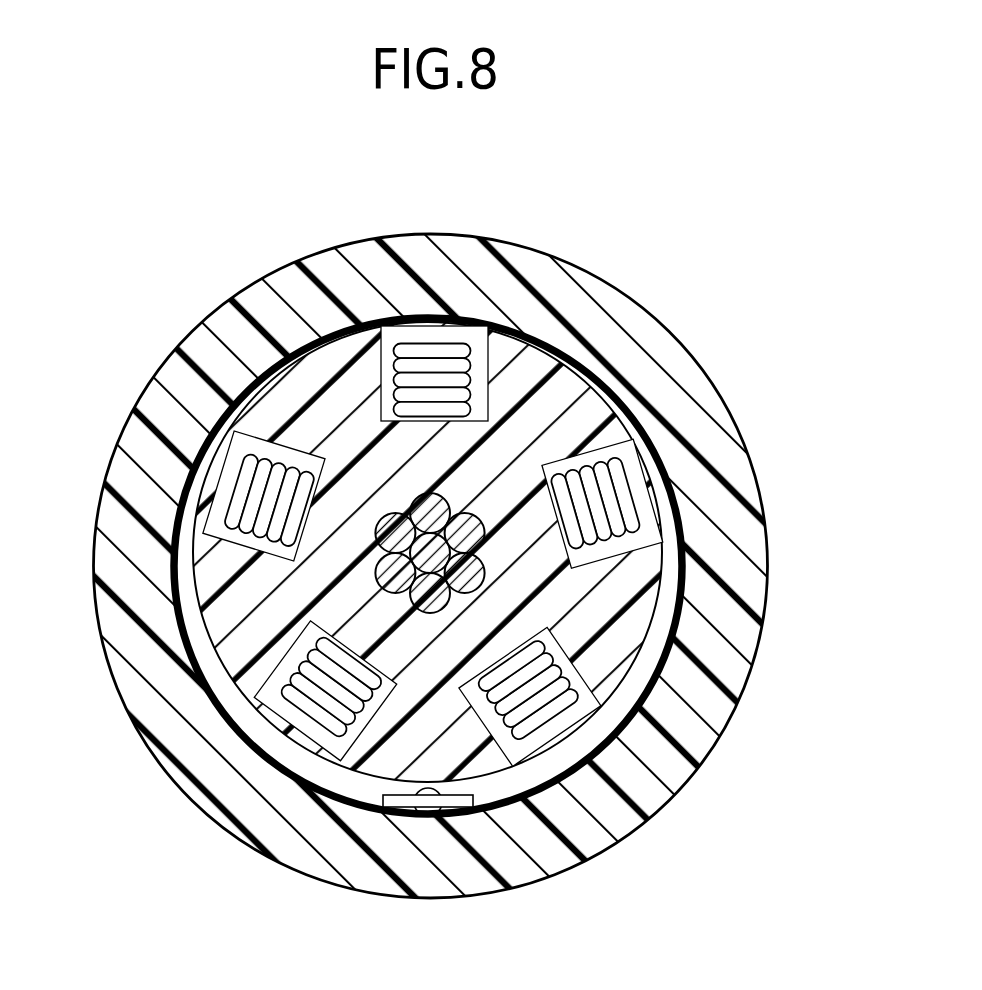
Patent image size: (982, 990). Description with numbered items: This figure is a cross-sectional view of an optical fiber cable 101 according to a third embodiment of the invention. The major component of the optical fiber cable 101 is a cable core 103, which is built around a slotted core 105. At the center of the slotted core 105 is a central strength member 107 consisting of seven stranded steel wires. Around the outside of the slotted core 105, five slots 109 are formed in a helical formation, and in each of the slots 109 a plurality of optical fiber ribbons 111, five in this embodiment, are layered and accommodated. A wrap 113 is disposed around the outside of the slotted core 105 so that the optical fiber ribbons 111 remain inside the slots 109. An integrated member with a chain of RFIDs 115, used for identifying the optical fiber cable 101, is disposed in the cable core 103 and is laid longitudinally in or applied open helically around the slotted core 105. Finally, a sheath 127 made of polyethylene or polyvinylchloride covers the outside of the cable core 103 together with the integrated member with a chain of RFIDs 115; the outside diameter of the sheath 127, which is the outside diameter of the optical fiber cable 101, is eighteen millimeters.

The optical fiber cable 101 is at (765, 218).
The cable core 103 is at (307, 337).
The slotted core 105 is at (637, 561).
The central strength member 107 is at (447, 604).
The slots 109 is at (383, 347).
The optical fiber ribbons 111 is at (468, 406).
The wrap 113 is at (627, 733).
The integrated member with a chain of RFIDs 115 is at (397, 808).
The sheath 127 is at (623, 290).